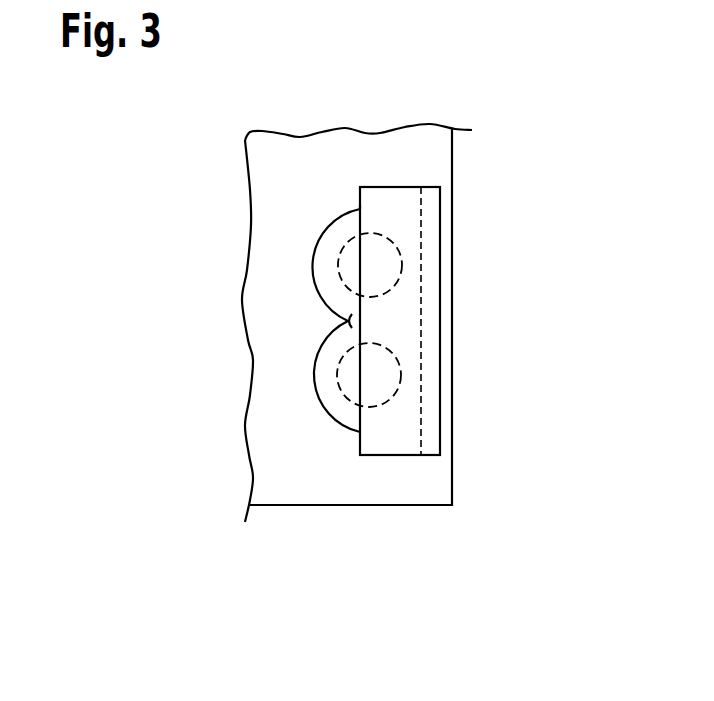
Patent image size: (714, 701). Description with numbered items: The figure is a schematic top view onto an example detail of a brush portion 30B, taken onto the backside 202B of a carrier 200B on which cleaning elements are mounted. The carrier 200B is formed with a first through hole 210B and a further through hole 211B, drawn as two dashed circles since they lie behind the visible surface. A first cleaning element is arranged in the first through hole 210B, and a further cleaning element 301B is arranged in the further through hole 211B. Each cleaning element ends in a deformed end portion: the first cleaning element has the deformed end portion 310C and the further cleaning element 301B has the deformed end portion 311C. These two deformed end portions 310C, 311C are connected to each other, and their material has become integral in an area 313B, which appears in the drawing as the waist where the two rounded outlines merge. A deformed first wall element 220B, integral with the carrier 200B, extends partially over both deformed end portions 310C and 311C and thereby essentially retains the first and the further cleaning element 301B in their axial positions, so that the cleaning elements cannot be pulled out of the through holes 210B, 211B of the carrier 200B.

The brush portion 30B is at (235, 478).
The carrier 200B is at (400, 510).
The backside 202B is at (262, 420).
The first through hole 210B is at (401, 375).
The further through hole 211B is at (402, 267).
The deformed first wall element 220B is at (407, 432).
The further cleaning element 301B is at (342, 200).
The deformed end portion 310C is at (338, 408).
The deformed end portion 311C is at (333, 237).
The area 313B is at (327, 322).